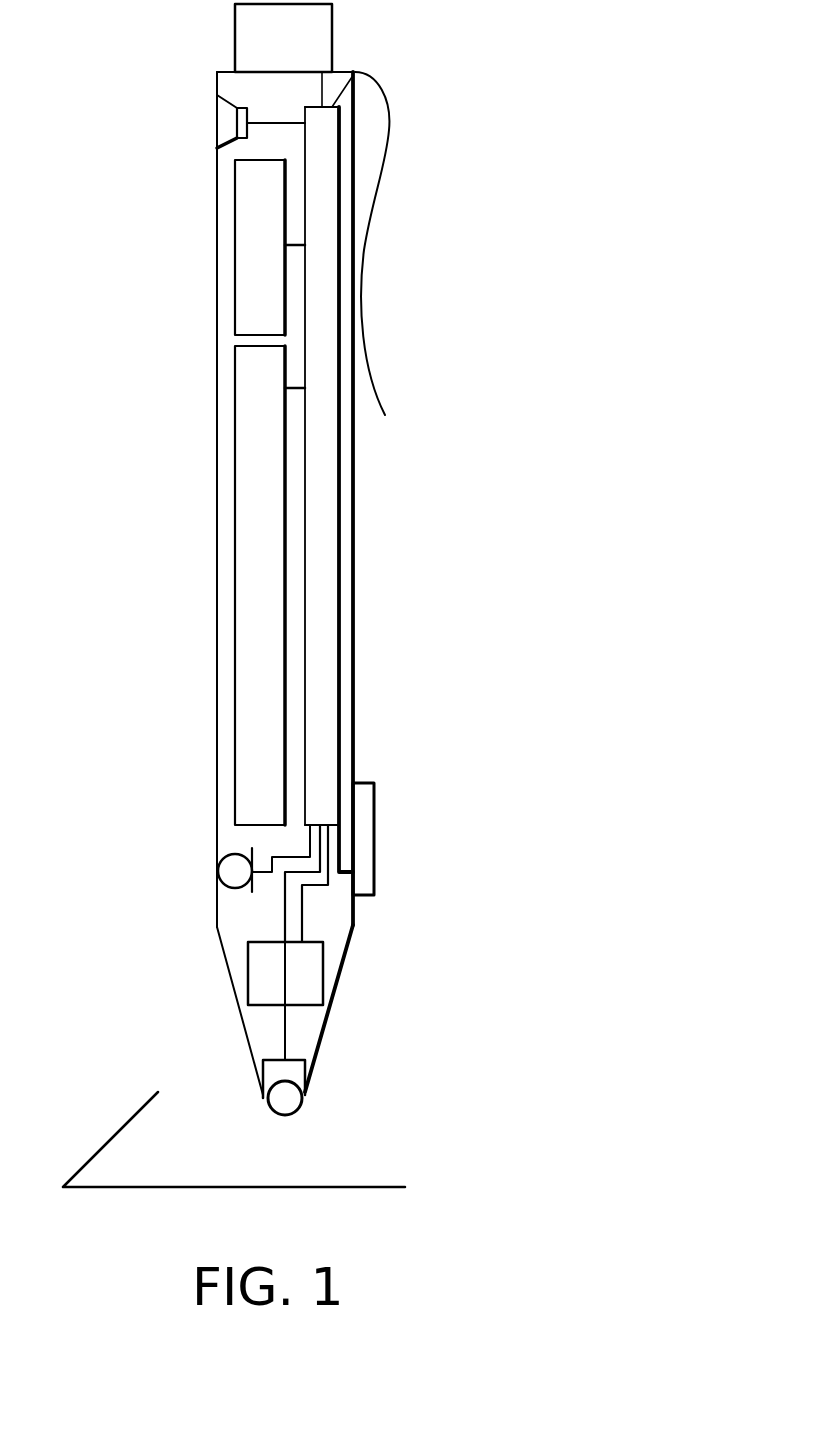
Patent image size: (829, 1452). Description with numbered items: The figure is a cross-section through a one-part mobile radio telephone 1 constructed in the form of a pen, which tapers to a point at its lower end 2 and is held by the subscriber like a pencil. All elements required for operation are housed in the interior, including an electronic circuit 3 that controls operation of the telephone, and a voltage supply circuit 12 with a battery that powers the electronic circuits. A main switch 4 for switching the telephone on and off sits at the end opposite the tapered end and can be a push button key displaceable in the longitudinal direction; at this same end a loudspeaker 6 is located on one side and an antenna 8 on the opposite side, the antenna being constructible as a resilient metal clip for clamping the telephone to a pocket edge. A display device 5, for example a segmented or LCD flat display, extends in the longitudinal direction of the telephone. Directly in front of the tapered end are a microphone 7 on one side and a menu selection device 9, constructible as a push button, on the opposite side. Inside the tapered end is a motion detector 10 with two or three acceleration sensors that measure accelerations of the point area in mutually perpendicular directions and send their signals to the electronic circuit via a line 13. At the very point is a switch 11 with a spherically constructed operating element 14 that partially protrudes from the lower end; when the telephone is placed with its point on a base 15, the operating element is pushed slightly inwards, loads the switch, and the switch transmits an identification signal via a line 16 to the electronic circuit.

The mobile radio telephone 1 is at (355, 490).
The lower end 2 is at (232, 985).
The electronic circuit 3 is at (322, 545).
The main switch 4 is at (332, 28).
The display device 5 is at (237, 388).
The loudspeaker 6 is at (217, 120).
The microphone 7 is at (222, 868).
The antenna 8 is at (390, 133).
The menu selection device 9 is at (376, 808).
The motion detector 10 is at (323, 975).
The switch 11 is at (265, 1073).
The voltage supply circuit 12 is at (237, 185).
The line 13 is at (302, 912).
The operating element 14 is at (285, 1117).
The base 15 is at (102, 1188).
The line 16 is at (285, 918).